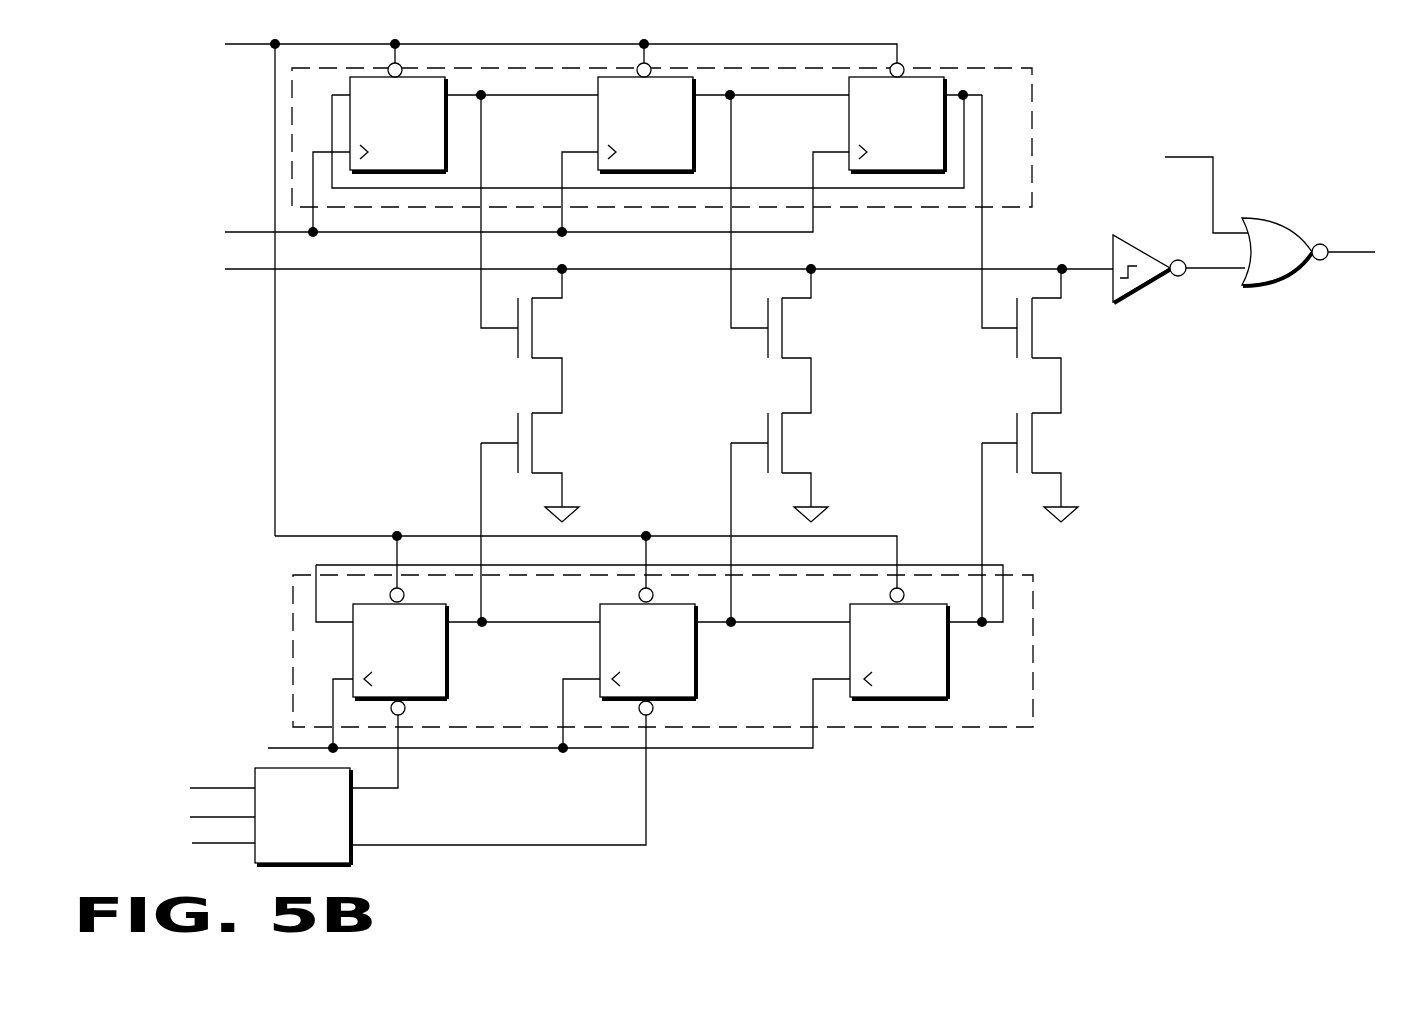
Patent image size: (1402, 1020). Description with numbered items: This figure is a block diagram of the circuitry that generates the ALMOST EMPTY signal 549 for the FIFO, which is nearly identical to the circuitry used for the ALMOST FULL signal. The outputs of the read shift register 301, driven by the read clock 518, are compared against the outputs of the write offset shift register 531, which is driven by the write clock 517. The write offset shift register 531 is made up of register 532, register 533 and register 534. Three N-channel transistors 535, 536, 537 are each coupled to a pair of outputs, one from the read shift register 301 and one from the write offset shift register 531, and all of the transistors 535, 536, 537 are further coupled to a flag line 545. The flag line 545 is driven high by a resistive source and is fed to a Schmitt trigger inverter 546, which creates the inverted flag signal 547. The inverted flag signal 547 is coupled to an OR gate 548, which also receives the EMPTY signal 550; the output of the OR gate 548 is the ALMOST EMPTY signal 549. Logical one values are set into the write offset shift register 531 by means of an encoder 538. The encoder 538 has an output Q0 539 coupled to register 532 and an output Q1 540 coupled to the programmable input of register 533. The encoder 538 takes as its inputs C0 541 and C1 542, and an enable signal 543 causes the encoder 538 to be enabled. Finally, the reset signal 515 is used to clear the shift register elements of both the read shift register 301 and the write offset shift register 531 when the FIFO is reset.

The reset signal 515 is at (220, 35).
The read clock 518 is at (504, 198).
The flag line 545 is at (265, 271).
The read shift register 301 is at (1025, 202).
The N-channel transistor 535 is at (563, 384).
The N-channel transistor 536 is at (813, 384).
The N-channel transistor 537 is at (1063, 384).
The Schmitt trigger inverter 546 is at (1165, 236).
The inverted flag signal 547 is at (1225, 270).
The EMPTY signal 550 is at (1178, 184).
The OR gate 548 is at (1294, 262).
The ALMOST EMPTY signal 549 is at (1338, 233).
The write offset shift register 531 is at (654, 629).
The register 532 is at (440, 691).
The register 533 is at (689, 691).
The register 534 is at (940, 691).
The write clock 517 is at (534, 718).
The encoder 538 is at (342, 858).
The output Q0 539 is at (398, 787).
The output Q1 540 is at (388, 842).
The input C0 541 is at (218, 788).
The input C1 542 is at (197, 817).
The enable signal 543 is at (197, 843).